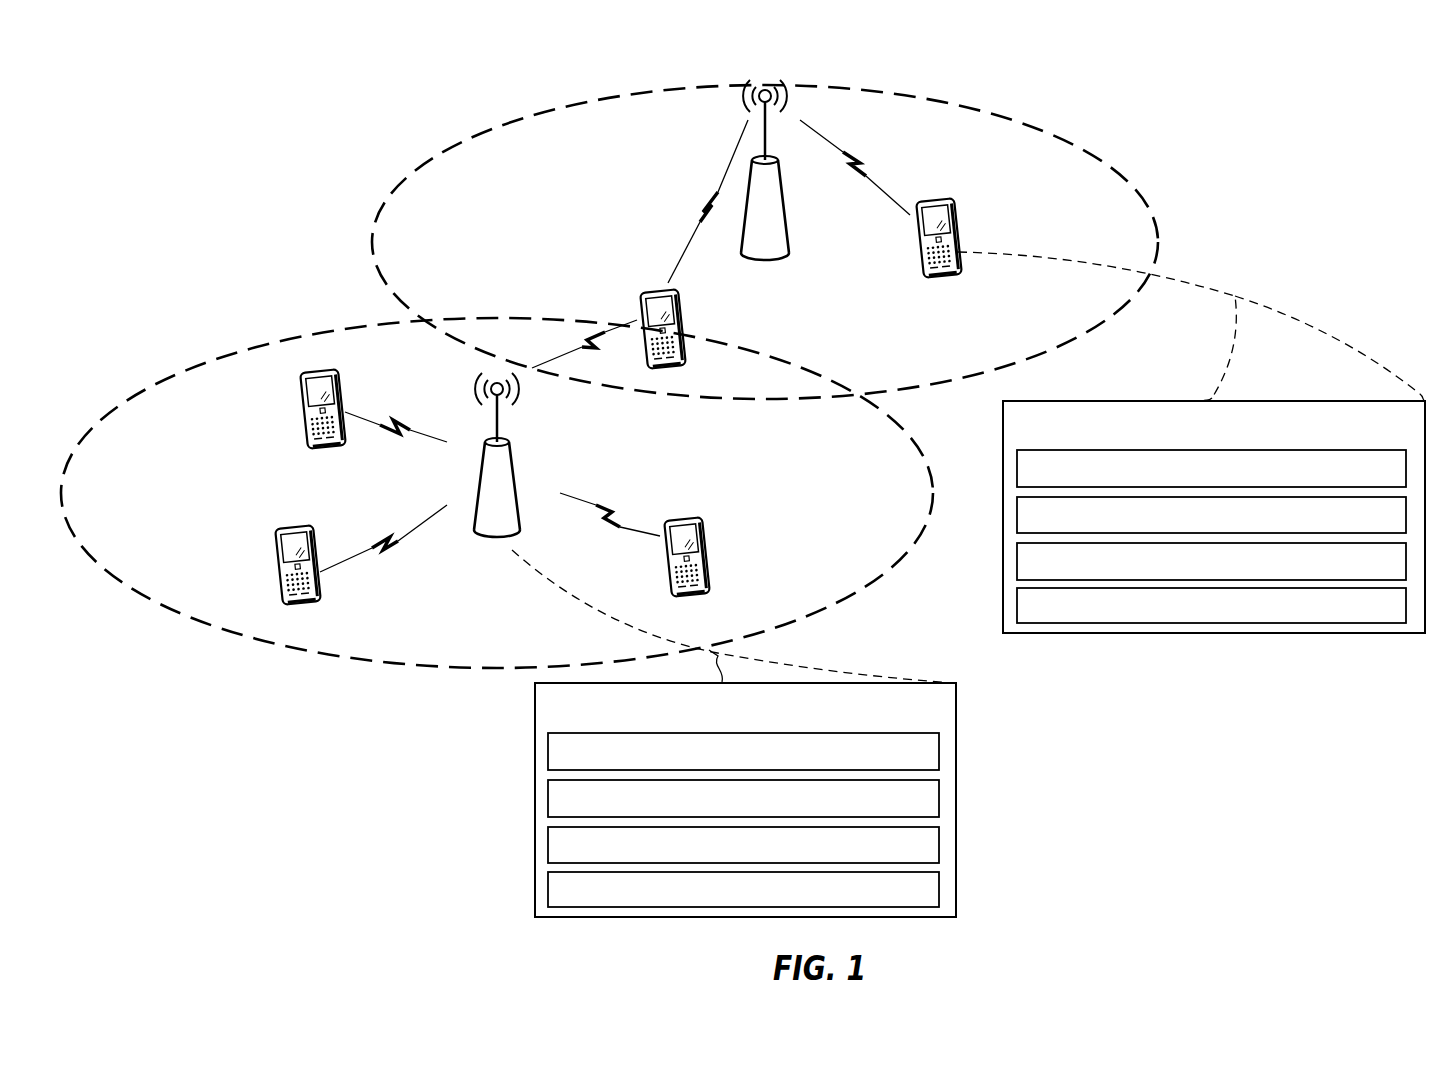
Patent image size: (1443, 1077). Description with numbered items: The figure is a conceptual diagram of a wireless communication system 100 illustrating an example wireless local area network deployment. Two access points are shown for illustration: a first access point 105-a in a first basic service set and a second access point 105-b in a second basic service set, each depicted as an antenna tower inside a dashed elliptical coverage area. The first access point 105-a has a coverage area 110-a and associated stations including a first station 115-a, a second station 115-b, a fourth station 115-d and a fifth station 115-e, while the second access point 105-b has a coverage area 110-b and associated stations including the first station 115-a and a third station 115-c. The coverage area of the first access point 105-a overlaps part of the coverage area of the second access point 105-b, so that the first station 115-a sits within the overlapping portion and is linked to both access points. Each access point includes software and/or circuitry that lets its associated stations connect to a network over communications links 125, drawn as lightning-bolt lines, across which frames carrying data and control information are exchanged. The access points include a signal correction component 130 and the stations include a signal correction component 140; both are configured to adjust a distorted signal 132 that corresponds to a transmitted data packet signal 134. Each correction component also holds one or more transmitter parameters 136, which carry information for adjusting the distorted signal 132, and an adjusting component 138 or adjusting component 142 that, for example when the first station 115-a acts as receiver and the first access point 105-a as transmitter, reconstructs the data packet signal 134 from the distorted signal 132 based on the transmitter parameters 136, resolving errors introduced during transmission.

The wireless communication system 100 is at (163, 92).
The AP1 105-a is at (505, 538).
The AP2 105-b is at (786, 260).
The coverage area 110-a is at (137, 393).
The coverage area 110-b is at (878, 91).
The STA1 115-a is at (644, 304).
The STA2 115-b is at (280, 540).
The STA3 115-c is at (958, 212).
The STA4 115-d is at (706, 532).
The STA5 115-e is at (306, 380).
The communications links 125 is at (418, 412).
The signal correction component 130 is at (923, 719).
The distorted signal 132 is at (848, 762).
The data packet signal 134 is at (867, 809).
The transmitter parameters 136 is at (890, 856).
The adjusting component 138 is at (878, 901).
The signal correction component 140 is at (1390, 434).
The adjusting component 142 is at (1346, 616).